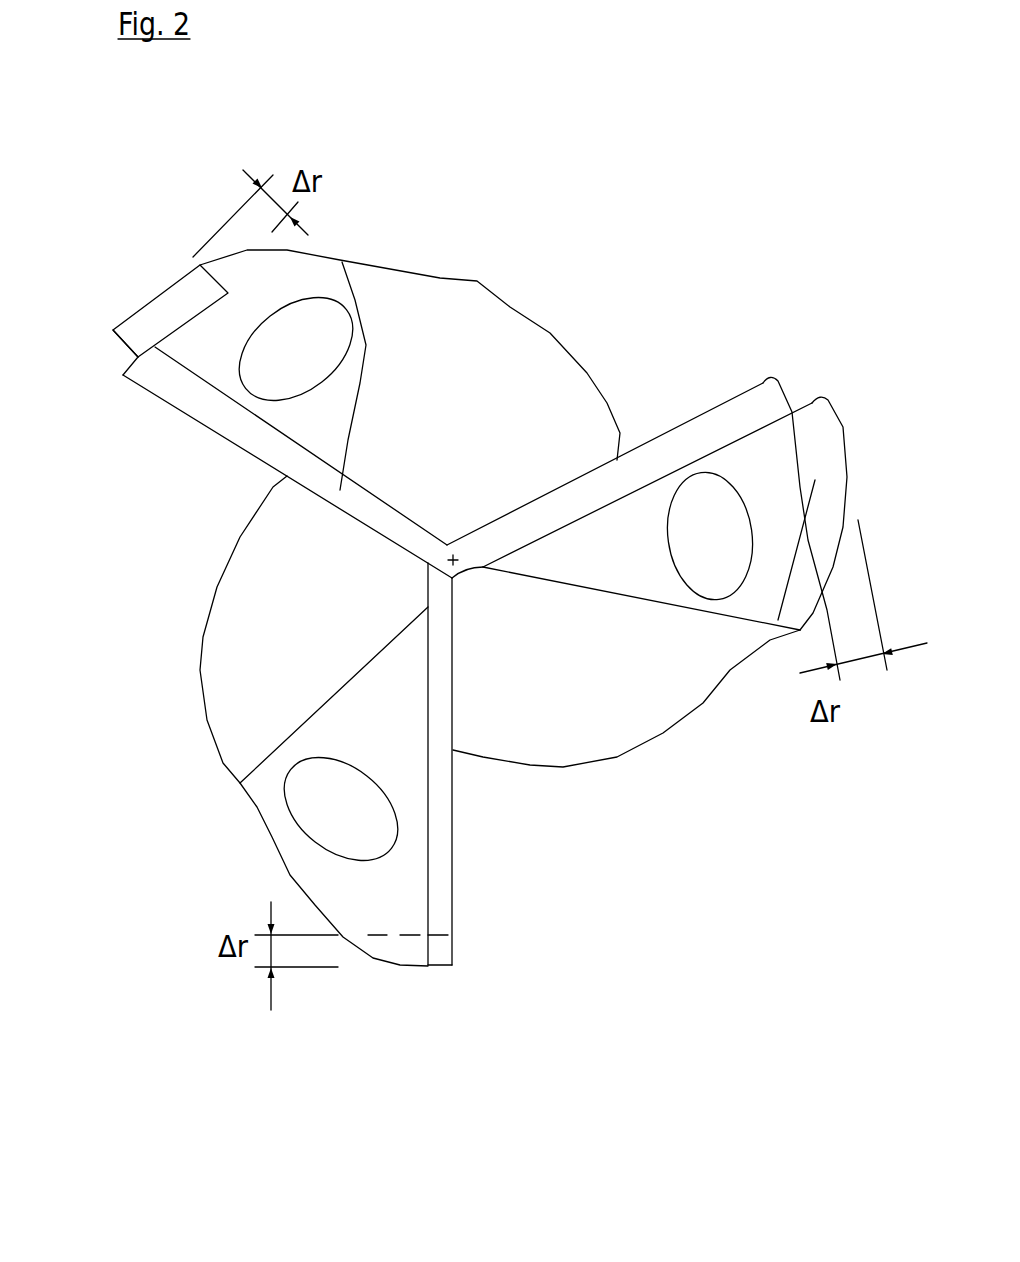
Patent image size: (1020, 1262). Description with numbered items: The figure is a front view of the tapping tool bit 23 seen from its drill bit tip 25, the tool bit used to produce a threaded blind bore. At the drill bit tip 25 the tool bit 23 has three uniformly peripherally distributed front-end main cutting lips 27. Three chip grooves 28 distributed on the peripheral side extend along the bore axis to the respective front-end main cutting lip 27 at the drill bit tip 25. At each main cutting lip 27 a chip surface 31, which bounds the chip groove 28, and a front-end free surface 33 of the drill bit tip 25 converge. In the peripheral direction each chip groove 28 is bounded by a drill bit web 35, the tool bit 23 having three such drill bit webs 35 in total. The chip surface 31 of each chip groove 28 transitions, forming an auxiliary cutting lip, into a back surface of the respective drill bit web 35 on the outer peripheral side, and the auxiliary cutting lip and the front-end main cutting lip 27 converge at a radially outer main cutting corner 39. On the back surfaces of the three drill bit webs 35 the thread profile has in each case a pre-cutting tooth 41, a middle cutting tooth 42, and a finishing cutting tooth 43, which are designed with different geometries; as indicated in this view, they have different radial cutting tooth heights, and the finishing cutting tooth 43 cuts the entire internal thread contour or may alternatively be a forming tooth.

The tapping tool bit 23 is at (180, 793).
The drill bit tip 25 is at (452, 548).
The front-end main cutting lip 27 is at (173, 407).
The chip groove 28 is at (580, 320).
The chip surface 31 is at (538, 491).
The front-end free surface 33 is at (430, 537).
The drill bit web 35 is at (275, 850).
The main cutting corner 39 is at (123, 375).
The pre-cutting tooth 41 is at (453, 965).
The middle cutting tooth 42 is at (118, 344).
The finishing cutting tooth 43 is at (813, 403).